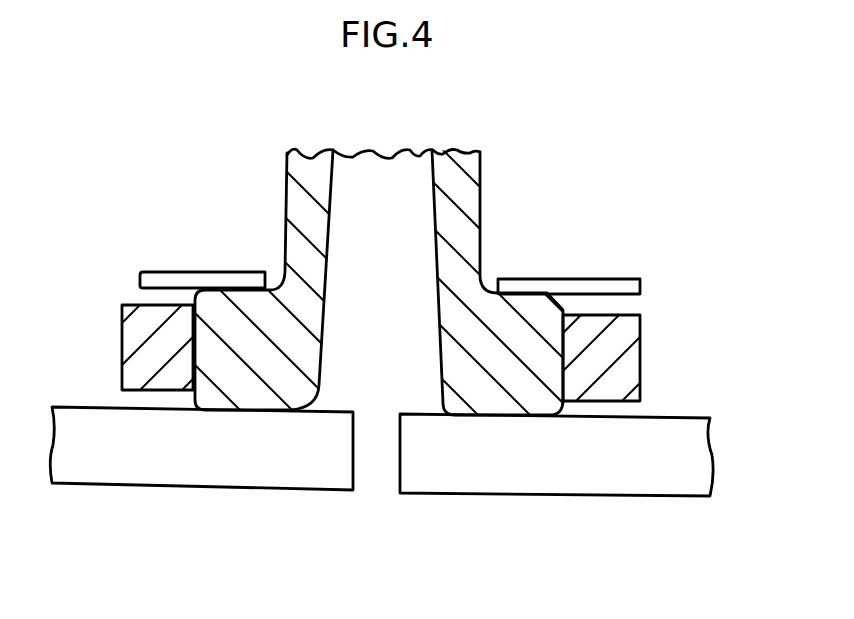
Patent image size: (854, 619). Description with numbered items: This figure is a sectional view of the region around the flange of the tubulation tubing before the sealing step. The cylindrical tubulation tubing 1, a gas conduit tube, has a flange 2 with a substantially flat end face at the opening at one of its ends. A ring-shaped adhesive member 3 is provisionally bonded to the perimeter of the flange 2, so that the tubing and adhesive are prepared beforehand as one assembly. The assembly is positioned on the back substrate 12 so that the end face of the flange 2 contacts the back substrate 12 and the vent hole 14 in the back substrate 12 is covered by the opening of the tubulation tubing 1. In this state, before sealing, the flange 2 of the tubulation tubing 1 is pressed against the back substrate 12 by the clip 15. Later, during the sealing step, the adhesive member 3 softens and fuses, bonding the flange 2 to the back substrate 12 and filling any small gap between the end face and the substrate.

The tubulation tubing 1 is at (467, 190).
The flange 2 is at (495, 405).
The adhesive member 3 is at (628, 360).
The back substrate 12 is at (678, 437).
The vent hole 14 is at (400, 453).
The clip 15 is at (620, 287).